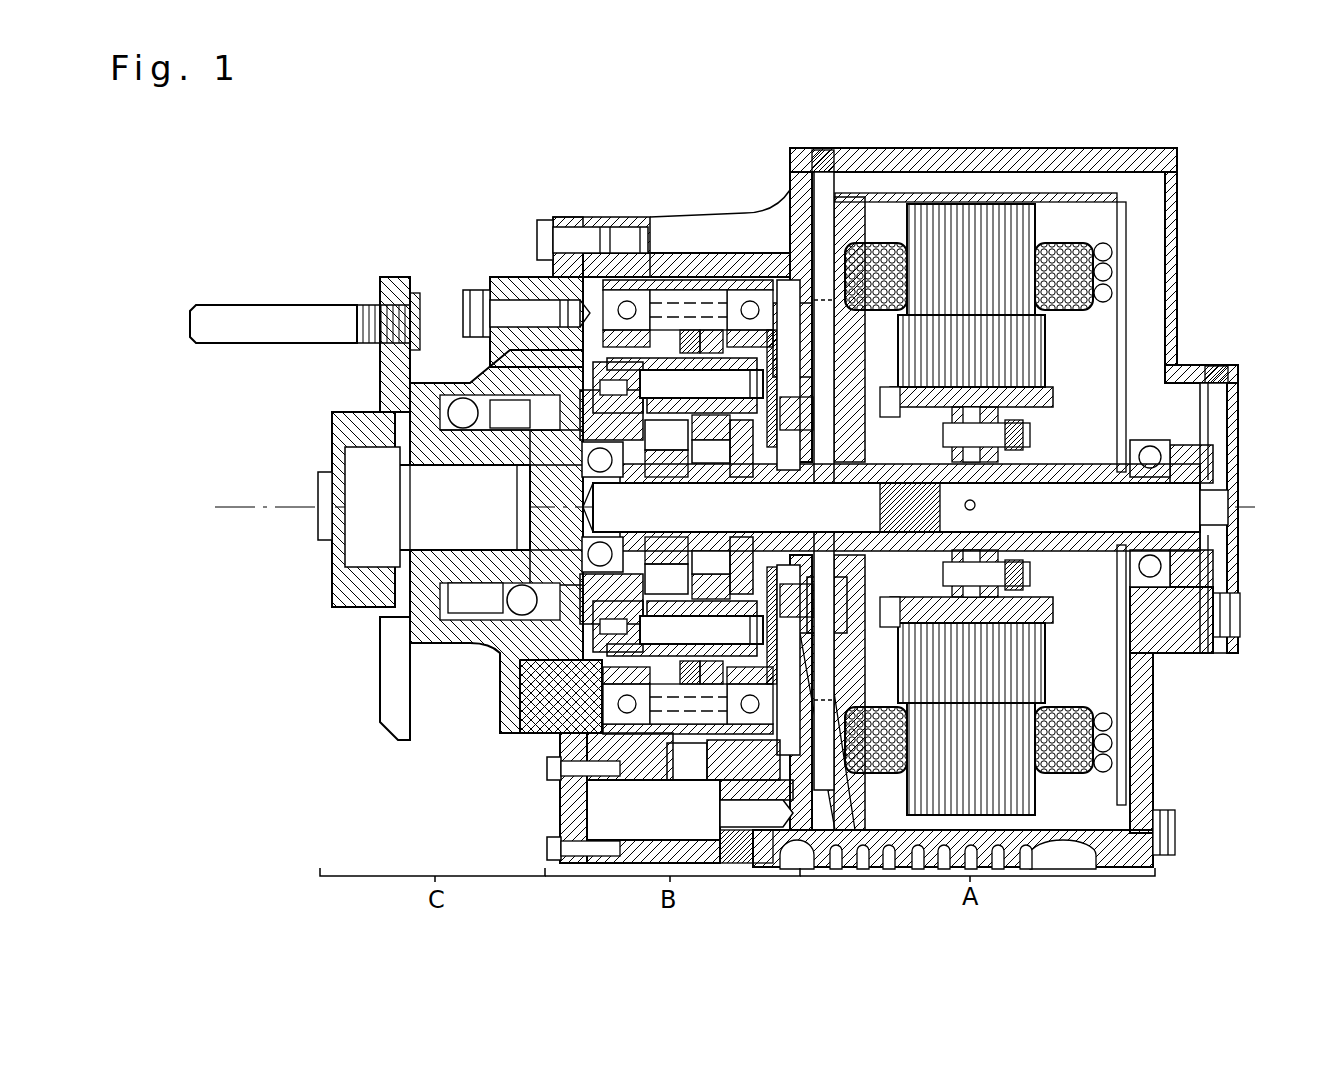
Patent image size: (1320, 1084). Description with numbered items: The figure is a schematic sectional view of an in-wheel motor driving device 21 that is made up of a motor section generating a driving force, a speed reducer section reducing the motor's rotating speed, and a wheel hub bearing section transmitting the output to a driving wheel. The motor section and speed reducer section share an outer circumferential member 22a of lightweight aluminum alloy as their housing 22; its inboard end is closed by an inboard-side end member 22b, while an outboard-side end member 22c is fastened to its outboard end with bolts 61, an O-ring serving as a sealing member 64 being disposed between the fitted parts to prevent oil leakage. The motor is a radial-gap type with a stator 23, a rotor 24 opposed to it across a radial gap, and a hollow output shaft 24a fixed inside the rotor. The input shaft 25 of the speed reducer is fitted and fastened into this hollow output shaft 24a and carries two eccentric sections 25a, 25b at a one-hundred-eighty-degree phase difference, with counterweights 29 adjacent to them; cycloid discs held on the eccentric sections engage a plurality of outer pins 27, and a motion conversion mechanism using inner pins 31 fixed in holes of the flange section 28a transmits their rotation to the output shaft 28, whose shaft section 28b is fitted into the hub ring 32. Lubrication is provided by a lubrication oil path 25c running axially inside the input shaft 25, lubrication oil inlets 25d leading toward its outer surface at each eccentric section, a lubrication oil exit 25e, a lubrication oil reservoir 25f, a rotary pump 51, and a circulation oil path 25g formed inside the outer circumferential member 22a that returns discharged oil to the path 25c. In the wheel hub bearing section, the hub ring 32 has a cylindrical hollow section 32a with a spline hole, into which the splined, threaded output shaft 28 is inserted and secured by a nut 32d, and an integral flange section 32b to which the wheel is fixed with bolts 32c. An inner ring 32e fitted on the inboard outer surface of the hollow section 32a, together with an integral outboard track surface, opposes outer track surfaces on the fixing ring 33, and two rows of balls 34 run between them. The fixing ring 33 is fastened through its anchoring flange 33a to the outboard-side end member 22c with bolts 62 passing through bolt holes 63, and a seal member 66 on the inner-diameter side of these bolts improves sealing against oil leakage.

The in-wheel motor driving device 21 is at (348, 212).
The motor unit casing 22 is at (781, 230).
The outer circumferential member 22a is at (730, 257).
The inboard-side end member 22b is at (1178, 650).
The outboard-side end member 22c is at (577, 257).
The stator 23 is at (1105, 268).
The rotor 24 is at (1055, 365).
The hollow output shaft 24a is at (1050, 460).
The input shaft 25 is at (1150, 540).
The eccentric section 25a is at (580, 700).
The eccentric section 25b is at (588, 633).
The lubrication oil path 25c is at (1158, 493).
The lubrication oil inlet 25d is at (613, 700).
The lubrication oil exit 25e is at (650, 808).
The lubrication oil reservoir 25f is at (560, 845).
The circulation oil path 25g is at (1068, 178).
The outer pin 27 is at (690, 758).
The output shaft 28 is at (278, 645).
The flange section 28a is at (470, 600).
The shaft section 28b is at (453, 533).
The counterweight 29 is at (563, 648).
The inner pin 31 is at (557, 742).
The hub ring 32 is at (378, 373).
The cylindrical hollow section 32a is at (443, 470).
The flange section 32b is at (378, 283).
The bolt 32c is at (237, 312).
The nut 32d is at (345, 533).
The inner ring 32e is at (455, 438).
The fixing ring 33 is at (465, 368).
The anchoring flange 33a is at (543, 307).
The balls 34 is at (460, 413).
The rotary pump 51 is at (793, 295).
The bolt 61 is at (541, 220).
The bolt 62 is at (473, 307).
The bolt hole 63 is at (540, 313).
The sealing member 64 is at (557, 240).
The seal member 66 is at (533, 320).